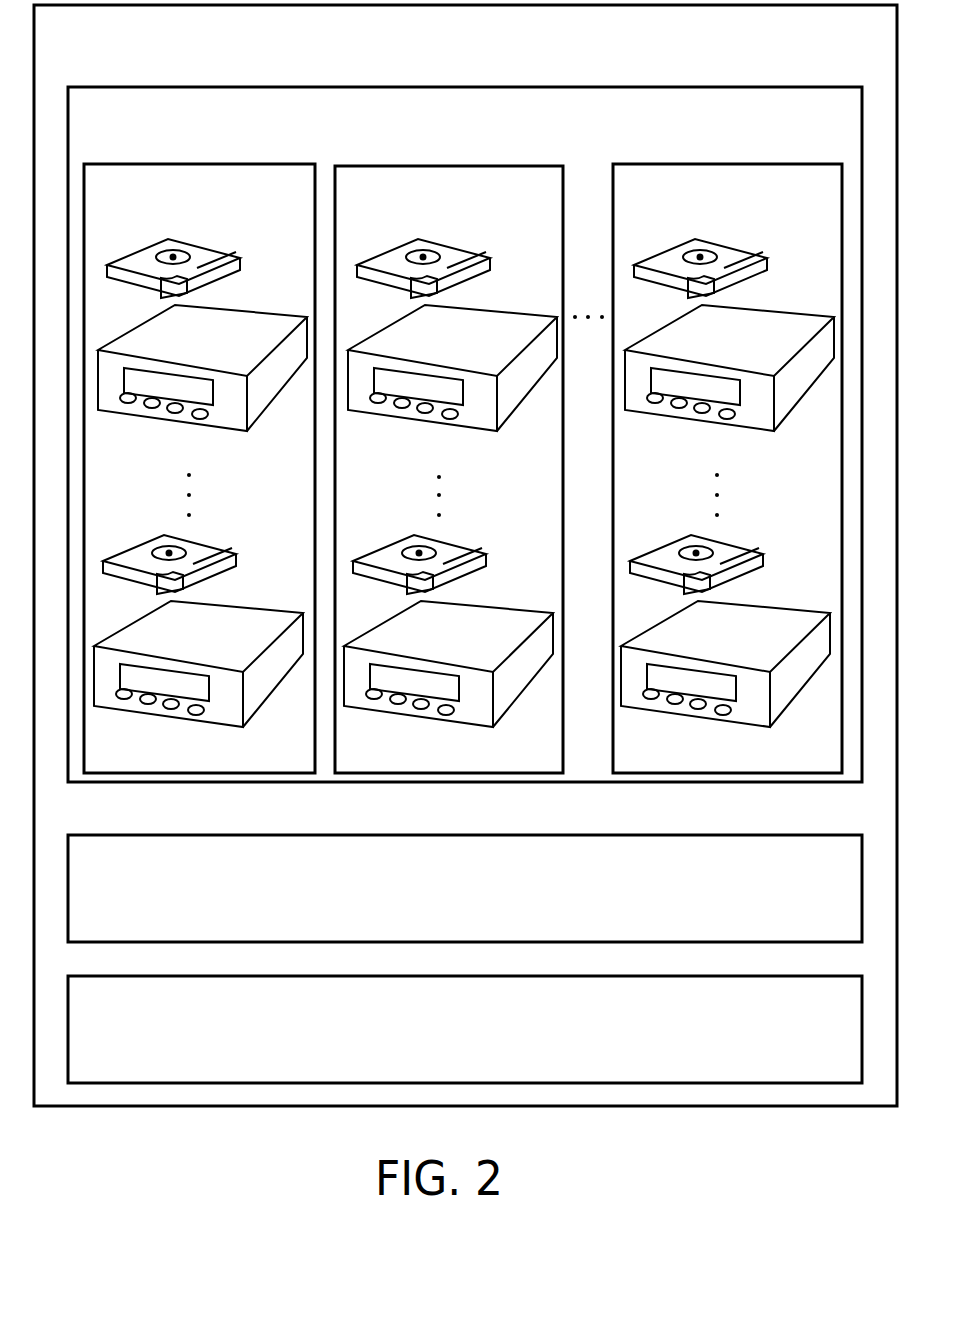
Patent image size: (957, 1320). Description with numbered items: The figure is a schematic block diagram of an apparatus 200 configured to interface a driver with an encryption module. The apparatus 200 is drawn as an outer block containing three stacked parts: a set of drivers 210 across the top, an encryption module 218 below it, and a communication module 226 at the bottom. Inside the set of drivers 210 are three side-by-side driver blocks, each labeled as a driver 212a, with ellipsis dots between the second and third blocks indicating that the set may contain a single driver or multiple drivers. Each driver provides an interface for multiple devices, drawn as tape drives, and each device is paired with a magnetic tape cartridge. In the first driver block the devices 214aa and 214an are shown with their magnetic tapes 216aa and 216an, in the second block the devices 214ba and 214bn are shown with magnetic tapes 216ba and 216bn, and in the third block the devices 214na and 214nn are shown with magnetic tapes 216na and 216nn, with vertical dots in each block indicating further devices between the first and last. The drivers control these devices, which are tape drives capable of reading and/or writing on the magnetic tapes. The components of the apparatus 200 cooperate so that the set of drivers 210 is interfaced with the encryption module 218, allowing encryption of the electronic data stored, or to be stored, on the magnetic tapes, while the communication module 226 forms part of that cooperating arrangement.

The apparatus 200 is at (447, 68).
The set of drivers 210 is at (445, 147).
The driver 212a is at (754, 225).
The device 214aa is at (227, 433).
The device 214ba is at (452, 386).
The device 214na is at (729, 385).
The device 214an is at (197, 681).
The device 214bn is at (447, 679).
The device 214nn is at (725, 679).
The magnetic tape 216aa is at (240, 258).
The magnetic tape 216ba is at (472, 210).
The magnetic tape 216na is at (741, 206).
The magnetic tape 216an is at (202, 548).
The magnetic tape 216bn is at (452, 548).
The magnetic tape 216nn is at (729, 547).
The encryption module 218 is at (446, 897).
The communication module 226 is at (446, 1037).